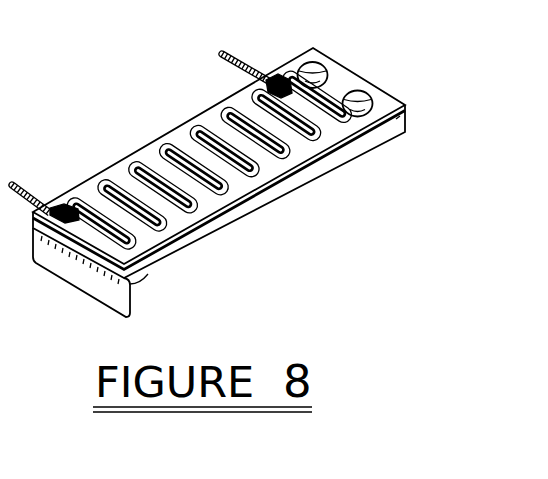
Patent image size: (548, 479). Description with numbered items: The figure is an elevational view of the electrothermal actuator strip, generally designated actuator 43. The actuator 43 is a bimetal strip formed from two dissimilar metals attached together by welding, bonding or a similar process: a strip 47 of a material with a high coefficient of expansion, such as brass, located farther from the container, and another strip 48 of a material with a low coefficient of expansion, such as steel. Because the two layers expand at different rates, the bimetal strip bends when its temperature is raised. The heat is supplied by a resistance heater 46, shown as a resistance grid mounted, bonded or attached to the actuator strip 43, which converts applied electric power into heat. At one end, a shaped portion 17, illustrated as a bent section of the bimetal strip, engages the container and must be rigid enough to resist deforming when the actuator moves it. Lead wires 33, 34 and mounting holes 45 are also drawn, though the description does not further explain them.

The shaped portion 17 is at (100, 303).
The lead wire 33 is at (28, 186).
The lead wire 34 is at (238, 66).
The electrothermal actuator strip 43 is at (252, 217).
The mounting holes 45 is at (314, 74).
The resistance heater 46 is at (186, 242).
The strip 47 is at (281, 182).
The strip 48 is at (340, 164).